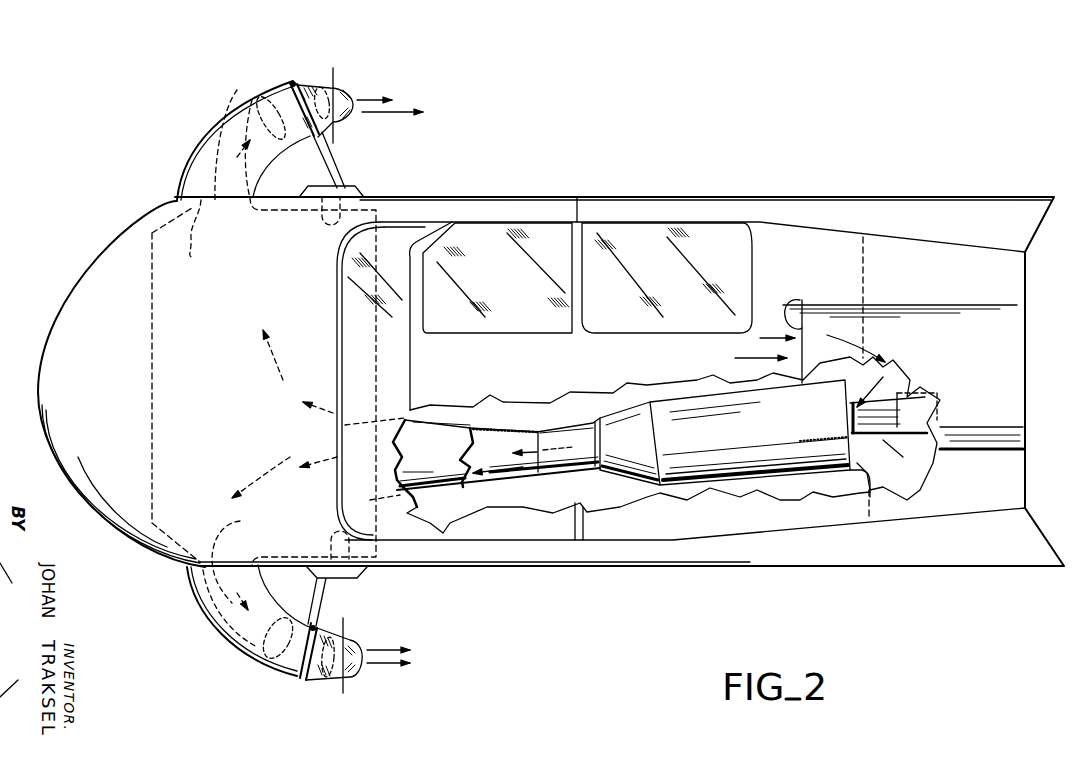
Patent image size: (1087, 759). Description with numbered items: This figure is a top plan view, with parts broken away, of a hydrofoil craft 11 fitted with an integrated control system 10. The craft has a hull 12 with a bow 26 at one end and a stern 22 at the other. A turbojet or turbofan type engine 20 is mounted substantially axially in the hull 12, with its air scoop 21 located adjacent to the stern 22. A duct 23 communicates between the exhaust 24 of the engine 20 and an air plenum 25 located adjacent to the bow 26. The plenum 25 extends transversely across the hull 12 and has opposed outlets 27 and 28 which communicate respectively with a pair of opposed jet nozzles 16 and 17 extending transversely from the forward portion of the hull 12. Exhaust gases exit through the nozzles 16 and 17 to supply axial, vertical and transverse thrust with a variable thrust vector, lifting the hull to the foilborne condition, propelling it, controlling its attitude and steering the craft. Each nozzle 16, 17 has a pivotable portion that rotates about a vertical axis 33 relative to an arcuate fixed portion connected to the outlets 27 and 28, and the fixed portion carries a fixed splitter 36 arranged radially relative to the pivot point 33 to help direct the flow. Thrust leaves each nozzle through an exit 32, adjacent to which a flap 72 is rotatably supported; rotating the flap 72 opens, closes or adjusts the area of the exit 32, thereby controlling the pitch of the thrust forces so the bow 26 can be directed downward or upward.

The integrated control system 10 is at (290, 376).
The hydrofoil craft 11 is at (546, 578).
The hull 12 is at (134, 505).
The jet nozzle 16 is at (233, 100).
The jet nozzle 17 is at (187, 150).
The engine 20 is at (708, 476).
The air scoop 21 is at (800, 300).
The stern 22 is at (1028, 426).
The duct 23 is at (510, 428).
The exhaust 24 is at (633, 403).
The air plenum 25 is at (380, 400).
The bow 26 is at (55, 407).
The outlet 27 is at (238, 559).
The outlet 28 is at (190, 257).
The exit 32 is at (322, 133).
The vertical axis 33 is at (327, 588).
The fixed splitter 36 is at (293, 81).
The flap 72 is at (350, 93).